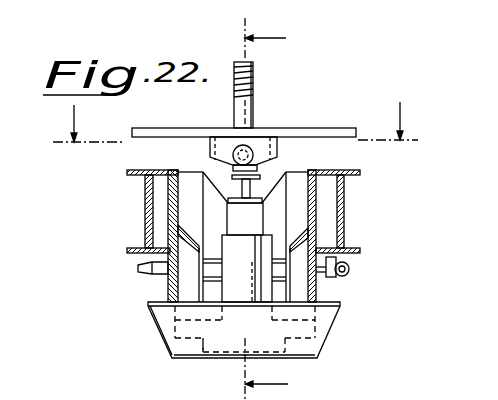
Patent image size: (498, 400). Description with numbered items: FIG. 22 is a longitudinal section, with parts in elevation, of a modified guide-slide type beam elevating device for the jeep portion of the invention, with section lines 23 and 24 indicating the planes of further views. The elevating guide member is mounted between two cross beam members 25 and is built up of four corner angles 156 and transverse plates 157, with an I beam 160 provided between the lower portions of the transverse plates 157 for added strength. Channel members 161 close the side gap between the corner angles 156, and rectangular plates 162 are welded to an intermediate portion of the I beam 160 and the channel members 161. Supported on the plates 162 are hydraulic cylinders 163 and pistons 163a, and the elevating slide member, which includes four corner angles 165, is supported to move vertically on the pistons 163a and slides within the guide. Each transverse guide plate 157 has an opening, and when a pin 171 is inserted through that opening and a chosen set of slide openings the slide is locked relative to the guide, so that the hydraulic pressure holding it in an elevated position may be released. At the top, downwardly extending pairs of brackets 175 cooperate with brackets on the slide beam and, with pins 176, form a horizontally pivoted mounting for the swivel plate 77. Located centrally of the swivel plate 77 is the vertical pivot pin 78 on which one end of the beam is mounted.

The section line 23- 23 is at (238, 121).
The section line 24- 24 is at (267, 206).
The cross beam member 25 is at (342, 192).
The swivel plate 77 is at (315, 129).
The vertical pivot pin 78 is at (252, 92).
The corner angle 156 is at (178, 283).
The transverse plate 157 is at (318, 226).
The I beam 160 is at (329, 326).
The channel member 161 is at (165, 328).
The rectangular plate 162 is at (229, 346).
The hydraulic cylinder 163 is at (244, 268).
The piston 163a is at (245, 219).
The corner angle 165 is at (192, 175).
The pin 171 is at (334, 258).
The bracket 175 is at (218, 147).
The pin 176 is at (253, 157).